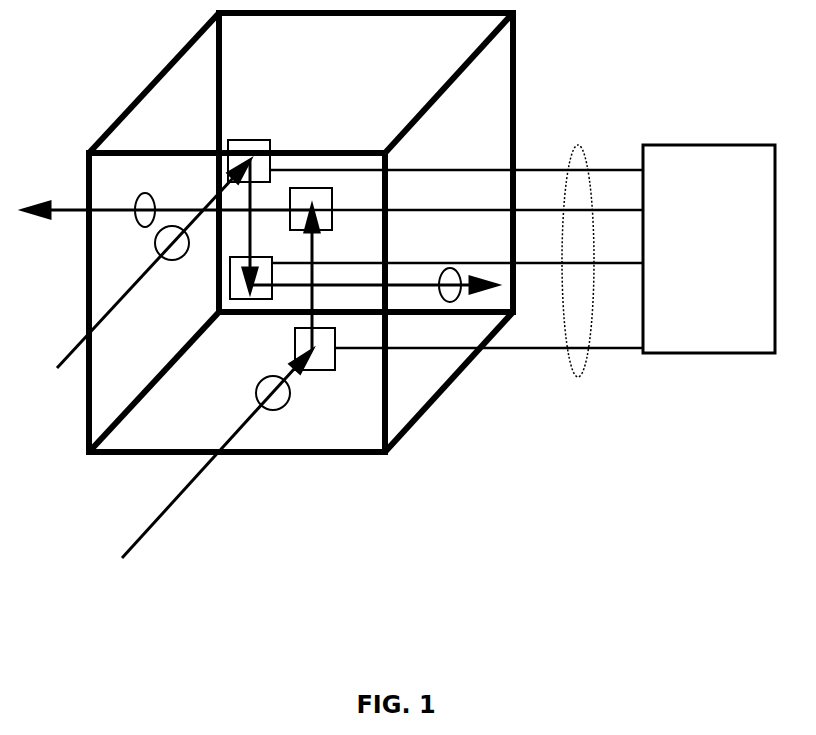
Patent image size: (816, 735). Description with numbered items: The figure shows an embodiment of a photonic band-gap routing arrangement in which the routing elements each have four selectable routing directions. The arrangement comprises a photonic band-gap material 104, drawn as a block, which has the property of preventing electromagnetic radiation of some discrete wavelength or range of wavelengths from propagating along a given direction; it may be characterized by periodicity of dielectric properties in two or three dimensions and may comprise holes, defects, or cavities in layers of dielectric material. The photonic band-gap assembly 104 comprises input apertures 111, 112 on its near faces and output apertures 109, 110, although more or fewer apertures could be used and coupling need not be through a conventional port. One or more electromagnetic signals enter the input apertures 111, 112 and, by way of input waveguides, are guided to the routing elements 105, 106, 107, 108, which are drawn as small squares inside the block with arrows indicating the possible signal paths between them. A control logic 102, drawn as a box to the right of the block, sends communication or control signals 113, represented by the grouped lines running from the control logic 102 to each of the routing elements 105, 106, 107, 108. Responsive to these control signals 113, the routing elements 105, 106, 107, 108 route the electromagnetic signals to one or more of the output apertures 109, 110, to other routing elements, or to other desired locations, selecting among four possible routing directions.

The control logic 102 is at (709, 249).
The photonic band-gap material 104 is at (513, 58).
The routing element 105 is at (267, 138).
The routing element 106 is at (337, 372).
The routing element 107 is at (233, 304).
The routing element 108 is at (317, 187).
The output aperture 109 is at (137, 193).
The output aperture 110 is at (452, 302).
The input aperture 111 is at (175, 263).
The input aperture 112 is at (275, 408).
The control signals 113 is at (582, 377).